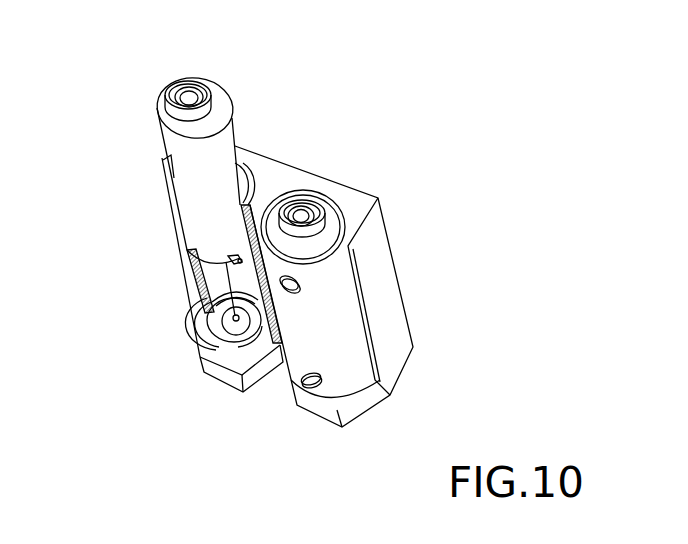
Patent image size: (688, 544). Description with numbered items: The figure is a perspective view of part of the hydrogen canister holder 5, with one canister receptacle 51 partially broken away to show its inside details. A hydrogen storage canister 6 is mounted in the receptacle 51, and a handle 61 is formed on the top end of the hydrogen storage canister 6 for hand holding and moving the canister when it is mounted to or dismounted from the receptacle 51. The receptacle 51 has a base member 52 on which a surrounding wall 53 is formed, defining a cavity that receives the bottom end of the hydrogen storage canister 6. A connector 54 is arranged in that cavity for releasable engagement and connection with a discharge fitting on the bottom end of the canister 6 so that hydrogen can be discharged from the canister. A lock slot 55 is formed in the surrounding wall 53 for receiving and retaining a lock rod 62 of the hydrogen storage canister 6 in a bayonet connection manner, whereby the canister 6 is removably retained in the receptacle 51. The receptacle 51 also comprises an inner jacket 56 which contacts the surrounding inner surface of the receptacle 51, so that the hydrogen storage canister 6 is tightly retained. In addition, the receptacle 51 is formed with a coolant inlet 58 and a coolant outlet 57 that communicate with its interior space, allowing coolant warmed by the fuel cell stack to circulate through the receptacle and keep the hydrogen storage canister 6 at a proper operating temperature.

The hydrogen canister holder 5 is at (252, 163).
The receptacle 51 is at (242, 168).
The hydrogen storage canister 6 is at (170, 142).
The handle 61 is at (173, 95).
The lock rod 62 is at (188, 248).
The inner jacket 56 is at (190, 297).
The base member 52 is at (263, 375).
The surrounding wall 53 is at (198, 358).
The connector 54 is at (228, 314).
The lock slot 55 is at (243, 352).
The coolant outlet 57 is at (292, 292).
The coolant inlet 58 is at (312, 389).